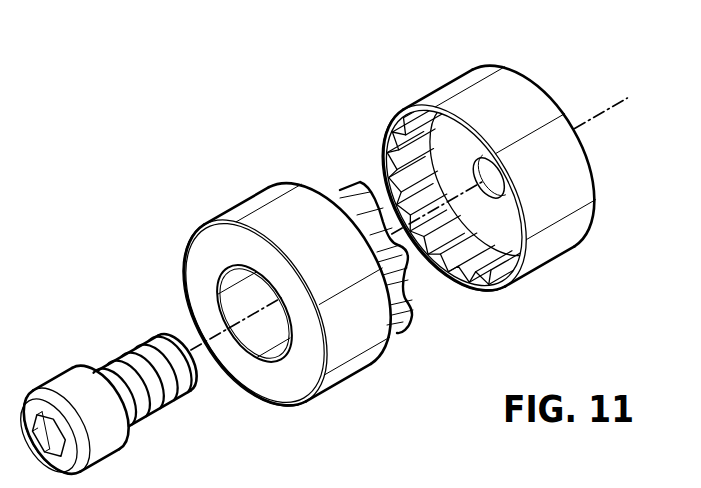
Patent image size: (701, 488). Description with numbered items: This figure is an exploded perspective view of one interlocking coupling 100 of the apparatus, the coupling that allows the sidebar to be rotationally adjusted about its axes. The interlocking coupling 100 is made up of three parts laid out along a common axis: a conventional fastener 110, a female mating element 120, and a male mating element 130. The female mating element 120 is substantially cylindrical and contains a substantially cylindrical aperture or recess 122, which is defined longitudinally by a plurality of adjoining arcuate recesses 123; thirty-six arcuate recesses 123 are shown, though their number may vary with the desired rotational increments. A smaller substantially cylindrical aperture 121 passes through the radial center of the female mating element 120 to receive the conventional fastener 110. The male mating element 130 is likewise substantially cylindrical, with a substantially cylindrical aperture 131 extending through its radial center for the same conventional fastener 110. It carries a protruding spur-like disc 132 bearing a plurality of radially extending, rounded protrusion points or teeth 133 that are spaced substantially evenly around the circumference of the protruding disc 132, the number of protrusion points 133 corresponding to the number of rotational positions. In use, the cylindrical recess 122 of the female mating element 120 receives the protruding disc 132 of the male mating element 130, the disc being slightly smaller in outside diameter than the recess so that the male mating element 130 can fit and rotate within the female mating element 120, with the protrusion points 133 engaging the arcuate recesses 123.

The interlocking coupling 100 is at (107, 198).
The conventional fastener 110 is at (113, 440).
The female mating element 120 is at (574, 276).
The cylindrical aperture 121 is at (489, 170).
The cylindrical aperture or recess 122 is at (460, 247).
The arcuate recesses 123 is at (387, 140).
The male mating element 130 is at (240, 186).
The cylindrical aperture 131 is at (258, 330).
The protruding spur-like disc 132 is at (411, 283).
The protrusion points or teeth 133 is at (352, 172).